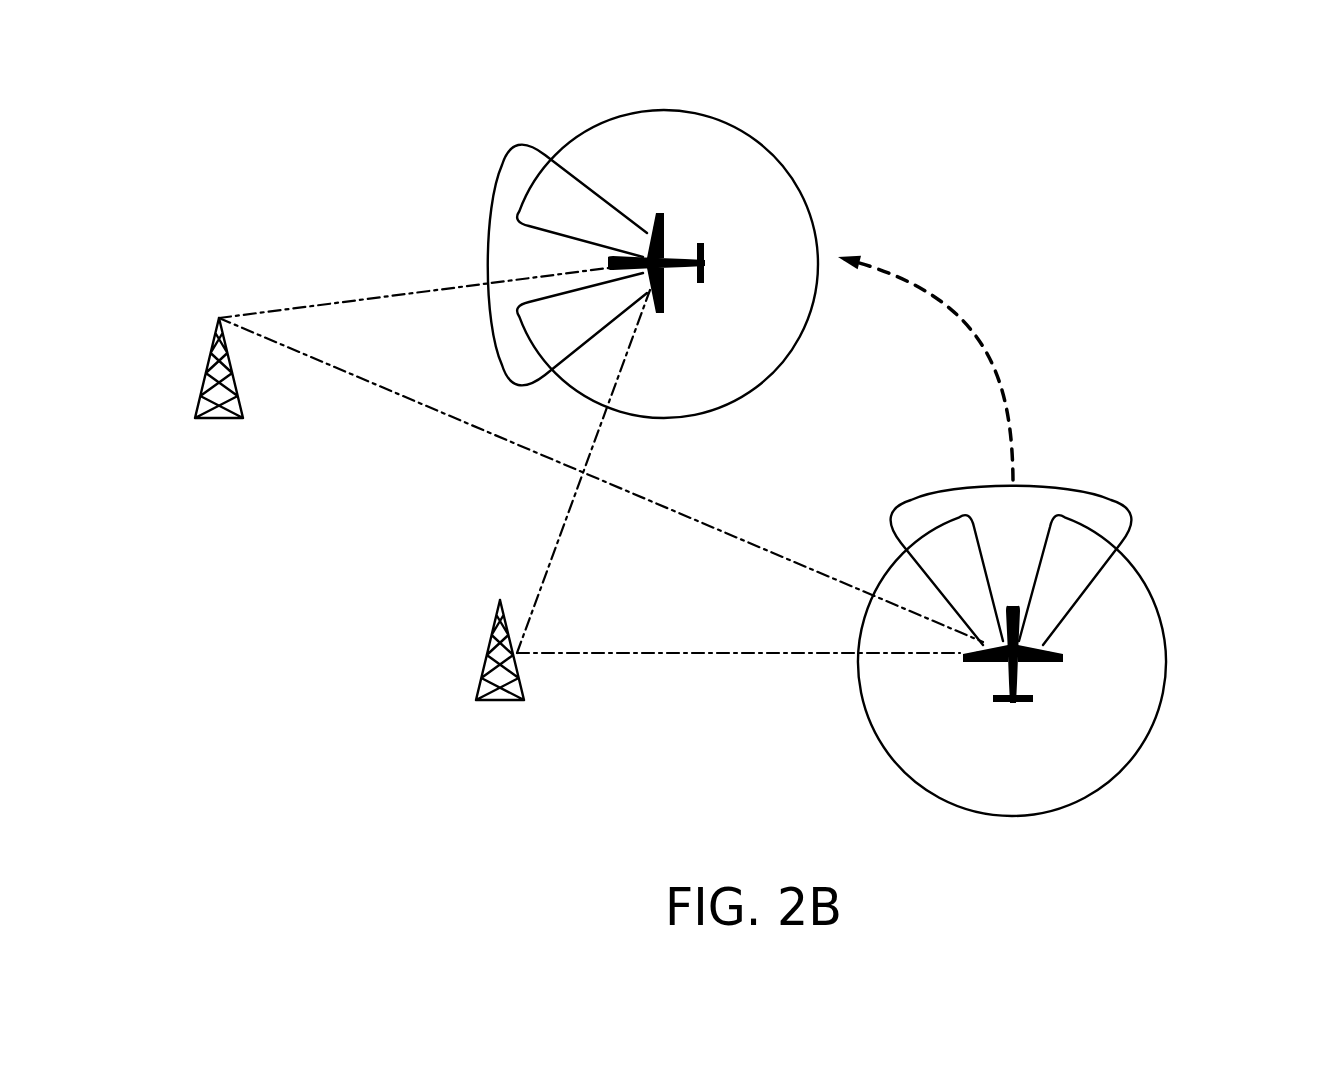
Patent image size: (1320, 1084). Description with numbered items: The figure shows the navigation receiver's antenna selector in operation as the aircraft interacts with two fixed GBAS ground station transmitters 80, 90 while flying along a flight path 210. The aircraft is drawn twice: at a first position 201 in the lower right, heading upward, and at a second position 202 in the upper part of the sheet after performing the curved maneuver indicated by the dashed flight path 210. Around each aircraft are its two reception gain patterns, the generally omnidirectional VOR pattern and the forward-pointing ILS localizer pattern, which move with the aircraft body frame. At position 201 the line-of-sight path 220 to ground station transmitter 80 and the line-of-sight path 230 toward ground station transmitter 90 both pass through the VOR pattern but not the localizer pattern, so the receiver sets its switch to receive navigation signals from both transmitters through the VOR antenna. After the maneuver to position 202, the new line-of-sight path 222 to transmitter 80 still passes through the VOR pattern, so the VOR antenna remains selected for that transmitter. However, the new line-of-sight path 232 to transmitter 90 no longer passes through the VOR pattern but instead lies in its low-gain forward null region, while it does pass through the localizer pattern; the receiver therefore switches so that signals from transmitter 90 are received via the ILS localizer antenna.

The ground station transmitter 80 is at (482, 670).
The ground station transmitter 90 is at (202, 388).
The position 201 is at (1182, 622).
The position 202 is at (864, 186).
The flight path 210 is at (987, 348).
The line-of-sight path 220 is at (758, 655).
The line-of-sight path 222 is at (540, 580).
The line-of-sight path 230 is at (783, 557).
The line-of-sight path 232 is at (370, 298).